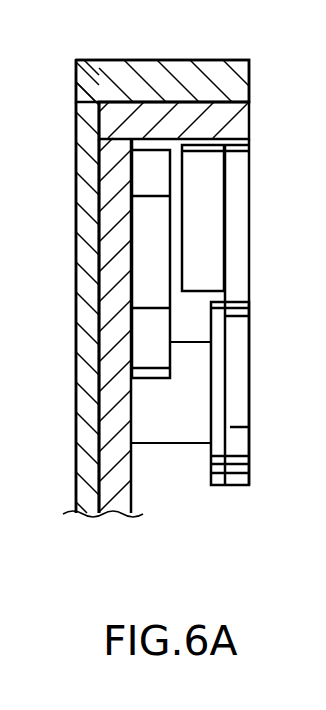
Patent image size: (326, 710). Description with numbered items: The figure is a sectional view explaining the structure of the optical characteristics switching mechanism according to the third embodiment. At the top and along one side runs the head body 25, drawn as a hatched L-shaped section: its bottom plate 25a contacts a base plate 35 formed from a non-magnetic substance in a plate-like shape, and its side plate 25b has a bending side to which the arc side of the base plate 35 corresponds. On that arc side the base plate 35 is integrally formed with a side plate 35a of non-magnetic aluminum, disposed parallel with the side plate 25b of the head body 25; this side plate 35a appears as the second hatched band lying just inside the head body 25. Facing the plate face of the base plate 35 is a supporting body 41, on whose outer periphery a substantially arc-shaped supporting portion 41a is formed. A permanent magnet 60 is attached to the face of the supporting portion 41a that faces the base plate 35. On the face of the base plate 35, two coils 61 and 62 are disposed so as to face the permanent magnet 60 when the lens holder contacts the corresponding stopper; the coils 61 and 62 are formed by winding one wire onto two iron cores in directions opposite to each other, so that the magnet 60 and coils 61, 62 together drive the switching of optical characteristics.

The head body 25 is at (67, 54).
The bottom plate 25a is at (88, 293).
The side plate 25b is at (182, 72).
The base plate 35 is at (120, 493).
The side plate 35a is at (240, 121).
The supporting body 41 is at (237, 351).
The supporting portion 41a is at (237, 218).
The permanent magnet 60 is at (203, 267).
The coil 61 is at (143, 172).
The coil 62 is at (143, 340).